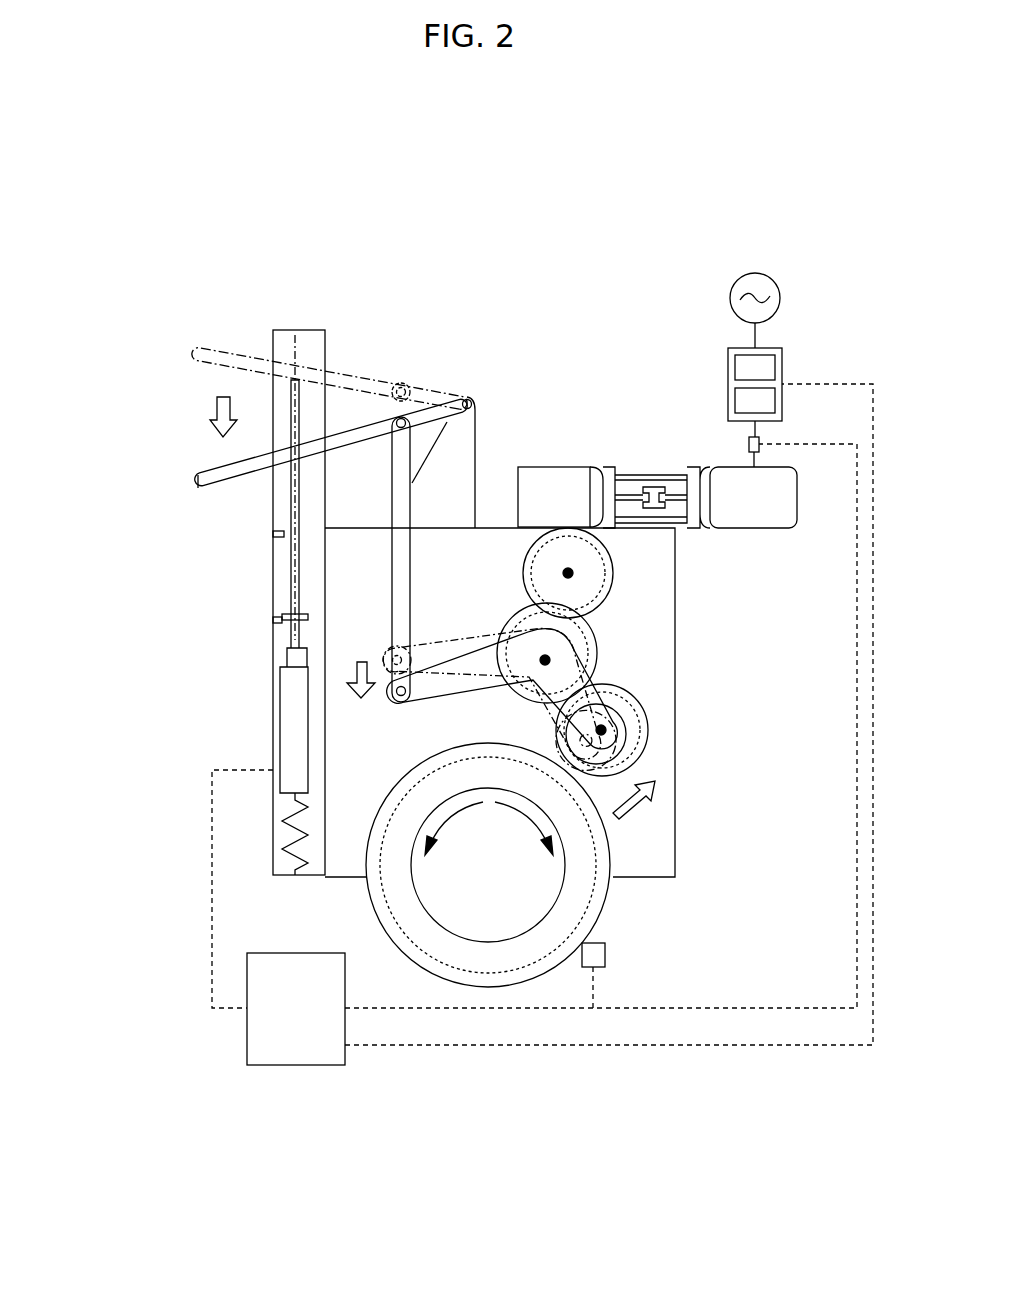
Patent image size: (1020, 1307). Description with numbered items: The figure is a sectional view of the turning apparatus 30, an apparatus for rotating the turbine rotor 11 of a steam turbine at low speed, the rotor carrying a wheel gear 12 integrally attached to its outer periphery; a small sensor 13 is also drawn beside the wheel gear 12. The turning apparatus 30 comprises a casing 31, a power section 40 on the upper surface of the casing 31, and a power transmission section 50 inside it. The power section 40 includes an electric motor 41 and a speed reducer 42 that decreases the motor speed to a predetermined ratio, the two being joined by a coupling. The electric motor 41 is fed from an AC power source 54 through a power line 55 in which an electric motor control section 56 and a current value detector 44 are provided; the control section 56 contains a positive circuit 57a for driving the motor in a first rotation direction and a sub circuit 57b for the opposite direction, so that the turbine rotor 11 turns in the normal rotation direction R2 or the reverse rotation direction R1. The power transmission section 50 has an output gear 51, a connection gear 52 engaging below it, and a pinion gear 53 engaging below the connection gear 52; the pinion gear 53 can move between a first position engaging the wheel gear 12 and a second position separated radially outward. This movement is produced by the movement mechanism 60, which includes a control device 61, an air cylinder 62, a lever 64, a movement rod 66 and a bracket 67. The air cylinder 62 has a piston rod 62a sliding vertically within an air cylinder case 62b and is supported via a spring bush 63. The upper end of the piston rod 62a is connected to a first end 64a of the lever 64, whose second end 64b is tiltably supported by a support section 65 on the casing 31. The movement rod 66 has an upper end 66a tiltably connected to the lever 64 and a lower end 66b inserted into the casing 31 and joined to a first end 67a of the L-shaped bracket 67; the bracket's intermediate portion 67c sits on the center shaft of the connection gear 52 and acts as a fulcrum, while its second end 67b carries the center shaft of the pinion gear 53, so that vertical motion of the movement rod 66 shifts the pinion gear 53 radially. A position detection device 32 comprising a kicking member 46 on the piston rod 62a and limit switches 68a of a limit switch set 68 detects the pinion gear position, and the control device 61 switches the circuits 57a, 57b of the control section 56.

The turbine rotor 11 is at (538, 902).
The wheel gear 12 is at (577, 885).
The temperature sensor 13 is at (603, 955).
The turning apparatus 30 is at (796, 268).
The casing 31 is at (676, 632).
The position detection device 32 is at (140, 650).
The power section 40 is at (563, 376).
The electric motor 41 is at (797, 497).
The speed reducer 42 is at (555, 467).
The current value detector 44 is at (749, 444).
The kicking member 46 is at (282, 615).
The power transmission section 50 is at (625, 591).
The output gear 51 is at (542, 562).
The connection gear 52 is at (520, 615).
The pinion gear 53 is at (618, 700).
The AC power source 54 is at (755, 273).
The power line 55 is at (756, 430).
The electric motor control section 56 is at (783, 370).
The positive circuit 57a is at (735, 368).
The sub circuit 57b is at (735, 400).
The movement mechanism 60 is at (143, 421).
The control device 61 is at (297, 1052).
The air cylinder 62 is at (282, 715).
The piston rod 62a is at (290, 575).
The air cylinder case 62b is at (272, 497).
The spring bush 63 is at (282, 838).
The lever 64 is at (430, 410).
The first end 64a is at (193, 480).
The second end 64b is at (467, 398).
The support section 65 is at (476, 436).
The movement rod 66 is at (393, 510).
The upper end 66a is at (396, 432).
The lower end 66b is at (401, 703).
The bracket 67 is at (440, 700).
The first end 67a is at (393, 664).
The second end 67b is at (606, 730).
The intermediate portion 67c is at (548, 660).
The position sensor 68 is at (213, 589).
The first limit switch 68a is at (272, 534).
The reverse rotation direction R1 is at (450, 818).
The normal rotation direction R2 is at (527, 818).